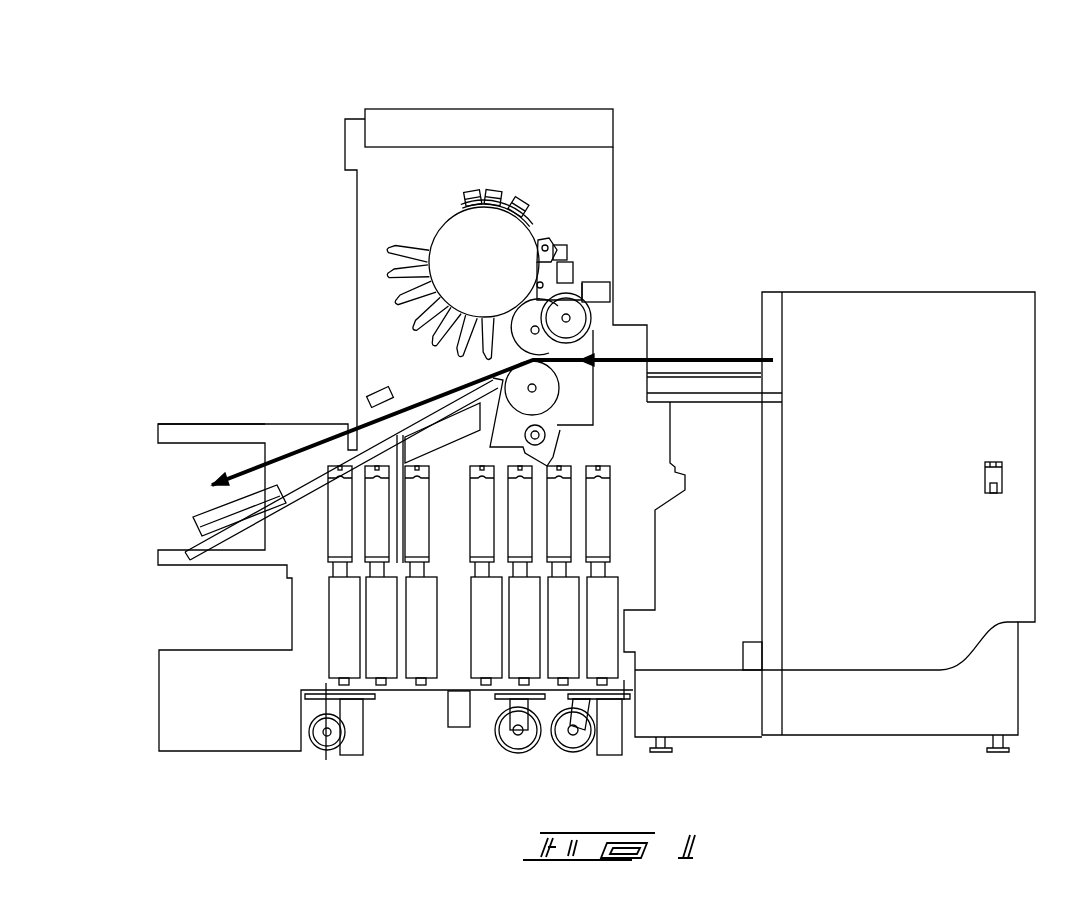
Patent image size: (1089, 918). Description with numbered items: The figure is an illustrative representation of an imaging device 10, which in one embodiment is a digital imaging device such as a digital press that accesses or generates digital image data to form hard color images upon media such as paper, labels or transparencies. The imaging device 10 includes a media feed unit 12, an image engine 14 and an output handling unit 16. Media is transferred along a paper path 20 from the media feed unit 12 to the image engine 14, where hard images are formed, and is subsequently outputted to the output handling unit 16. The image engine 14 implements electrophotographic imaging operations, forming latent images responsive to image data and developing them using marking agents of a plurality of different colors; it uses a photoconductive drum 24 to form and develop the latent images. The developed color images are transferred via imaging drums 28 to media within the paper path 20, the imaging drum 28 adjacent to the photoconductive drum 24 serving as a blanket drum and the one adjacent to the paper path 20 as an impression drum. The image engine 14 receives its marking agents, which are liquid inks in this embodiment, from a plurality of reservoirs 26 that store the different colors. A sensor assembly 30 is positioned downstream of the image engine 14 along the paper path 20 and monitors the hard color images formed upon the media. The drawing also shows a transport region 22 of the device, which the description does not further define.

The imaging device 10 is at (818, 123).
The media feed unit 12 is at (843, 292).
The image engine 14 is at (552, 193).
The output handling unit 16 is at (183, 486).
The paper path 20 is at (699, 357).
The transport section 22 is at (608, 393).
The photoconductive drum 24 is at (535, 230).
The reservoirs 26 is at (622, 758).
The imaging drums 28 is at (557, 387).
The sensor assembly 30 is at (374, 386).